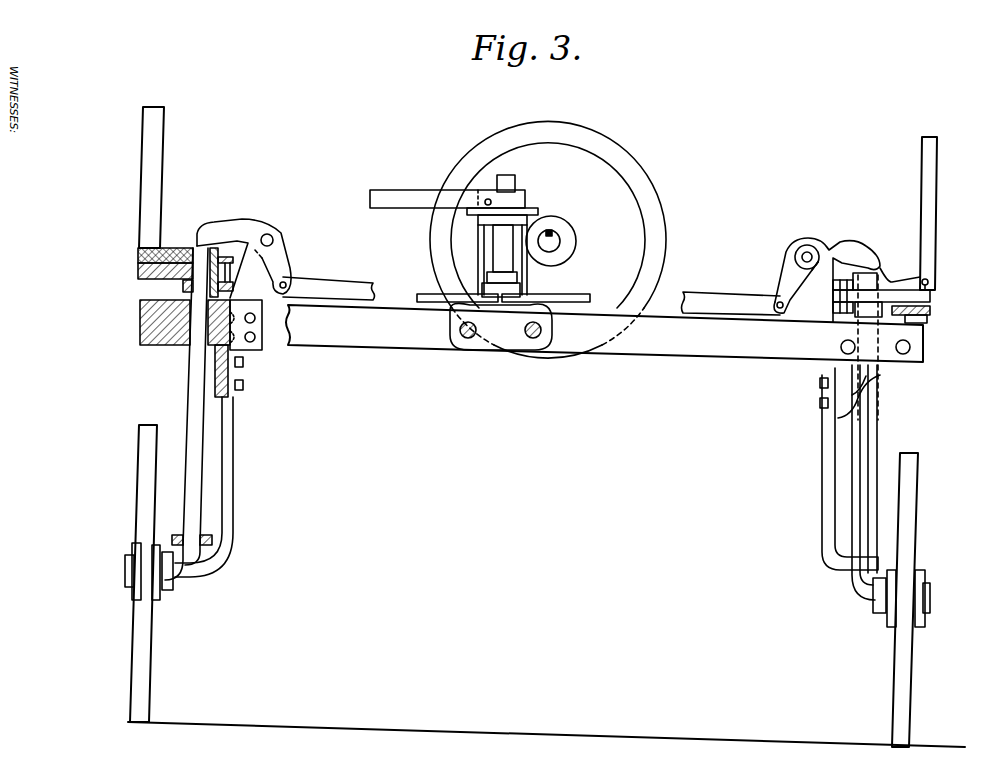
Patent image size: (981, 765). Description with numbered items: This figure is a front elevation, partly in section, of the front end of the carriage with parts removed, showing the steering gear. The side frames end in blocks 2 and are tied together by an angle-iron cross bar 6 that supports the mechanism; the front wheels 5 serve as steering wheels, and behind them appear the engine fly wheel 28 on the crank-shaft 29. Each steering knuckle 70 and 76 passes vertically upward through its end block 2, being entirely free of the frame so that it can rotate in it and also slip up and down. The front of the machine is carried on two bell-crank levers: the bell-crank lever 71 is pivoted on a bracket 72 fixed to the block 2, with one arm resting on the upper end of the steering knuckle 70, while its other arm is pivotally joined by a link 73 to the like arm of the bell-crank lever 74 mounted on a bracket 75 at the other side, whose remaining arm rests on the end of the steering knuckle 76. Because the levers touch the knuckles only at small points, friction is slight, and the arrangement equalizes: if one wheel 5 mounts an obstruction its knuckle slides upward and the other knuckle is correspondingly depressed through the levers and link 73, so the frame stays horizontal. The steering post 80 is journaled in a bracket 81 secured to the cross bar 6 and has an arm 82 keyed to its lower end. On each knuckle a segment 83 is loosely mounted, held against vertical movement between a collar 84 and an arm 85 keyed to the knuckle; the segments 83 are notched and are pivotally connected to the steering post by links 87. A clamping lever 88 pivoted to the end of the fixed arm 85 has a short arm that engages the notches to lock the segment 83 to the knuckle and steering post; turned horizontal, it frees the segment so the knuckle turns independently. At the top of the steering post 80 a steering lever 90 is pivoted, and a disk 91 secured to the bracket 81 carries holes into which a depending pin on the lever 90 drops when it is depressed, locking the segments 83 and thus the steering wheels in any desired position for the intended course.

The block 2 is at (140, 335).
The front wheels 5 is at (148, 633).
The cross bars 6 is at (646, 347).
The fly wheel 28 is at (651, 192).
The crank-shaft 29 is at (553, 243).
The steering knuckle 70 is at (195, 392).
The bell-crank lever 71 is at (243, 225).
The bracket 72 is at (262, 293).
The link 73 is at (340, 287).
The bell-crank lever 74 is at (833, 250).
The bracket 75 is at (795, 248).
The steering knuckle 76 is at (872, 418).
The steering post 80 is at (512, 182).
The bracket 81 is at (483, 245).
The arm 82 is at (514, 289).
The segment 83 is at (137, 258).
The collar 84 is at (183, 288).
The arm 85 is at (898, 262).
The links 87 is at (425, 303).
The clamping lever 88 is at (156, 159).
The steering lever 90 is at (403, 197).
The disk 91 is at (504, 242).